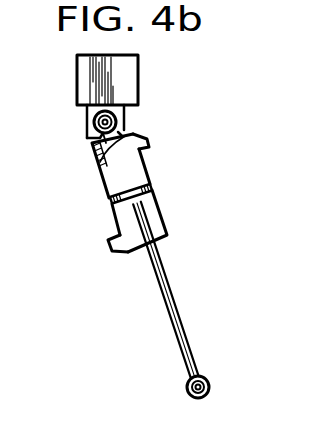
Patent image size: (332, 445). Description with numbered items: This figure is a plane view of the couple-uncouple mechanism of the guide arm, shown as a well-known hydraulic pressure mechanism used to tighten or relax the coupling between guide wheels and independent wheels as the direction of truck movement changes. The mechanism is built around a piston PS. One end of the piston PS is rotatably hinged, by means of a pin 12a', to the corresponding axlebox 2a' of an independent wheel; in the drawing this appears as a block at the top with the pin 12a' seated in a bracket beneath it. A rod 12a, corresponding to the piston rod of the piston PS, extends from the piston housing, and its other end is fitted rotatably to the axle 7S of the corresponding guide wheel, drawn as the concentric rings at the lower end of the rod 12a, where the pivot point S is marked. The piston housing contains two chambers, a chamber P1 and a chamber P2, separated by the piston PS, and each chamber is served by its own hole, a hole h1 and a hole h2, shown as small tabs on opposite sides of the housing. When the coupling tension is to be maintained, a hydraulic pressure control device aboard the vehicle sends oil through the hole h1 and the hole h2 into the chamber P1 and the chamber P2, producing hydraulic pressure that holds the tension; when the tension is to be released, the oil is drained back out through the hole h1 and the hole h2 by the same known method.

The axlebox 2a' is at (138, 80).
The pin 12a' is at (78, 122).
The hole h1 is at (141, 148).
The chamber P1 is at (113, 173).
The piston PS is at (150, 178).
The chamber P2 is at (156, 222).
The hole h2 is at (119, 237).
The rod 12a is at (176, 290).
The axle 7S is at (204, 374).
The pivot point S is at (208, 393).